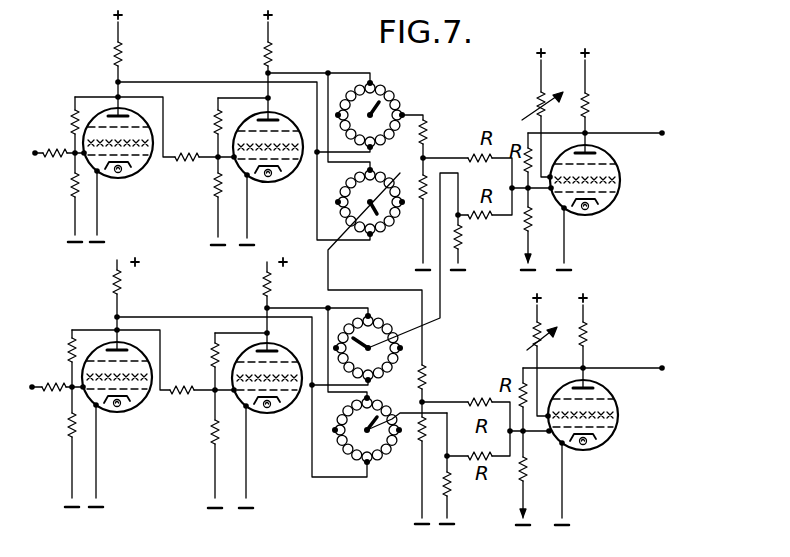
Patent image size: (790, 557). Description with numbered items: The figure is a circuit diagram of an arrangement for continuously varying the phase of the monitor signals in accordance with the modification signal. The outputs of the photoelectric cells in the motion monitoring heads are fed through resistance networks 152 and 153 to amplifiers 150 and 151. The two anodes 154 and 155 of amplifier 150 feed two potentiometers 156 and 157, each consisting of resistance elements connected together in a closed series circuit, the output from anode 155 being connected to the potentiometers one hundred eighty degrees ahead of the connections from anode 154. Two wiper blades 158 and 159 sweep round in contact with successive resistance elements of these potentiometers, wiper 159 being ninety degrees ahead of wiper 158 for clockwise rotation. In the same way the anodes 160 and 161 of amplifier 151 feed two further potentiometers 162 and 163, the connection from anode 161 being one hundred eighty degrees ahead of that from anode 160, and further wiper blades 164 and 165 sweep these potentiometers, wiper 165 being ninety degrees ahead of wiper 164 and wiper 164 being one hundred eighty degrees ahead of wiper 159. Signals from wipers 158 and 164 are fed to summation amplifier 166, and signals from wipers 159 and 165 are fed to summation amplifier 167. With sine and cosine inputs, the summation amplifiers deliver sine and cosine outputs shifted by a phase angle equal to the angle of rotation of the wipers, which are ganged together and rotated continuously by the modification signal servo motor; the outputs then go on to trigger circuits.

The amplifier 150 is at (135, 110).
The amplifier 151 is at (128, 347).
The resistance network 152 is at (72, 156).
The resistance network 153 is at (72, 390).
The anode 154 is at (110, 110).
The anode 155 is at (275, 112).
The potentiometer 156 is at (388, 97).
The potentiometer 157 is at (375, 257).
The wiper blade 158 is at (378, 110).
The wiper blade 159 is at (398, 222).
The anode 160 is at (100, 347).
The anode 161 is at (260, 349).
The potentiometer 162 is at (392, 316).
The potentiometer 163 is at (395, 455).
The wiper blade 164 is at (368, 350).
The wiper blade 165 is at (369, 407).
The summation amplifier 166 is at (603, 207).
The summation amplifier 167 is at (603, 443).